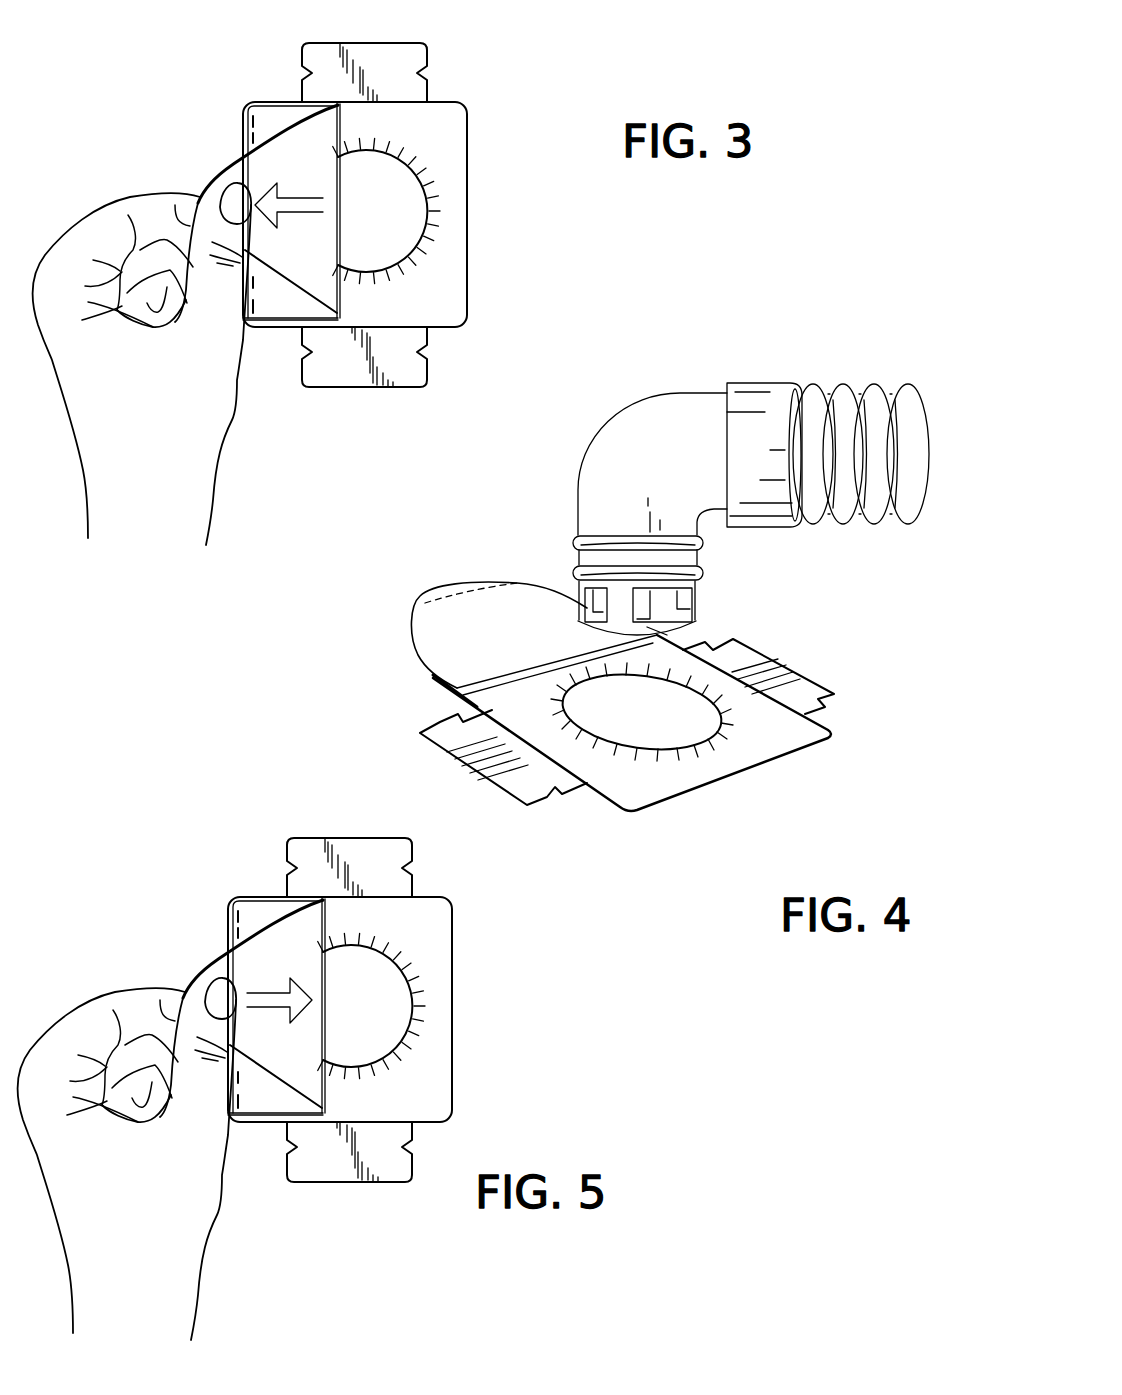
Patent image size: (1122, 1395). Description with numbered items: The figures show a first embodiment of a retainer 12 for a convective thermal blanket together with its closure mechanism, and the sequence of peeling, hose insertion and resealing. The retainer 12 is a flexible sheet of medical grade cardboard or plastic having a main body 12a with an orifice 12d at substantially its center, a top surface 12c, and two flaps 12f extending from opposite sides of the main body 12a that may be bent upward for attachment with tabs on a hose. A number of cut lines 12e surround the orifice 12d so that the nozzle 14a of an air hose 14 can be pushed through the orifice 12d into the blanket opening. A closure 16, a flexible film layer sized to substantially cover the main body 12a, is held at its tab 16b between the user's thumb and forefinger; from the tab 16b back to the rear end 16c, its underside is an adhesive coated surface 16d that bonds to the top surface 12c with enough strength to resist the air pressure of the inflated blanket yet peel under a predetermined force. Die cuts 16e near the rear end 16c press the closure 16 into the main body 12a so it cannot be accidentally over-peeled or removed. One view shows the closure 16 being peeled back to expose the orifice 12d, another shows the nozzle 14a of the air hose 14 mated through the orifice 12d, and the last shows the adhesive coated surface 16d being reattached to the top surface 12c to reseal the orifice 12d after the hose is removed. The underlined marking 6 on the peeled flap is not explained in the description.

In FIG. 3, the retainer 12 is at (488, 98).
In FIG. 4, the retainer 12 is at (663, 823).
In FIG. 5, the retainer 12 is at (420, 1018).
In FIG. 3, the main body 12a is at (448, 268).
In FIG. 4, the main body 12a is at (750, 752).
In FIG. 5, the main body 12a is at (340, 1009).
In FIG. 3, the top surface 12c is at (450, 314).
In FIG. 4, the top surface 12c is at (653, 790).
In FIG. 5, the top surface 12c is at (419, 922).
In FIG. 3, the orifice 12d is at (403, 225).
In FIG. 4, the orifice 12d is at (667, 722).
In FIG. 5, the orifice 12d is at (367, 1006).
In FIG. 3, the cut lines 12e is at (430, 212).
In FIG. 3, the flaps 12f is at (396, 43).
In FIG. 4, the flaps 12f is at (783, 667).
In FIG. 5, the flaps 12f is at (328, 1018).
In FIG. 4, the air hose 14 is at (832, 366).
In FIG. 4, the nozzle 14a is at (577, 600).
In FIG. 3, the closure 16 is at (266, 109).
In FIG. 4, the closure 16 is at (418, 634).
In FIG. 5, the closure 16 is at (212, 1075).
In FIG. 3, the tab 16b is at (212, 178).
In FIG. 4, the tab 16b is at (453, 594).
In FIG. 3, the rear end 16c is at (252, 122).
In FIG. 4, the adhesive coated surface 16d is at (532, 642).
In FIG. 5, the adhesive coated surface 16d is at (290, 1048).
In FIG. 3, the die cuts 16e is at (253, 285).
In FIG. 5, the die cuts 16e is at (169, 1000).
In FIG. 3, the liner underside marking 6 is at (325, 262).